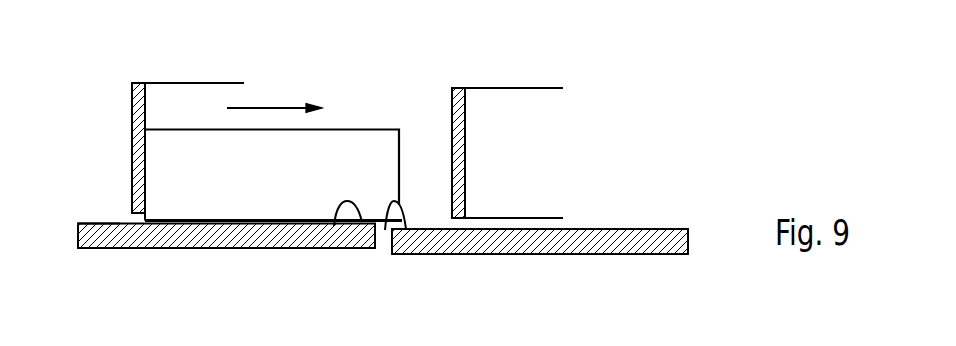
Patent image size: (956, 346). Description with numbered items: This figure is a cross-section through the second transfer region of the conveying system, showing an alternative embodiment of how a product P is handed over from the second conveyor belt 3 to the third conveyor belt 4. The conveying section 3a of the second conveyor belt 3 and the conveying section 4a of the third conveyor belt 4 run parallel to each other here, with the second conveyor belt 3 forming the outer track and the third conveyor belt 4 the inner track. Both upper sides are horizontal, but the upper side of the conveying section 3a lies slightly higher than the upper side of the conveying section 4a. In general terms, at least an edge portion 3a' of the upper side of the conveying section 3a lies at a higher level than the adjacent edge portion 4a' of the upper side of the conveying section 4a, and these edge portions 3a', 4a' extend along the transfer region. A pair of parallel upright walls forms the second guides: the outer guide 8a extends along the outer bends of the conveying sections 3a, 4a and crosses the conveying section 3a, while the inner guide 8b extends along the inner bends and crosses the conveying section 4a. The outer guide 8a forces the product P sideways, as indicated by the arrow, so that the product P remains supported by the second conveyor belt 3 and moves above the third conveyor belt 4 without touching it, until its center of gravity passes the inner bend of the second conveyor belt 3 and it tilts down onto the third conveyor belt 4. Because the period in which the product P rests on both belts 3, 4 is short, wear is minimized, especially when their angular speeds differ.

The second conveyor belt 3 is at (185, 248).
The third conveyor belt 4 is at (518, 254).
The conveying section of the second conveyor belt 3a is at (70, 196).
The conveying section of the third conveyor belt 4a is at (681, 198).
The edge portion of the upper side of the conveying section of the second conveyor b 3a' is at (339, 272).
The edge portion of the upper side of the conveying section of the third conveyor be 4a' is at (383, 272).
The outer second guide 8a is at (140, 90).
The inner second guide 8b is at (455, 88).
The product P is at (268, 210).